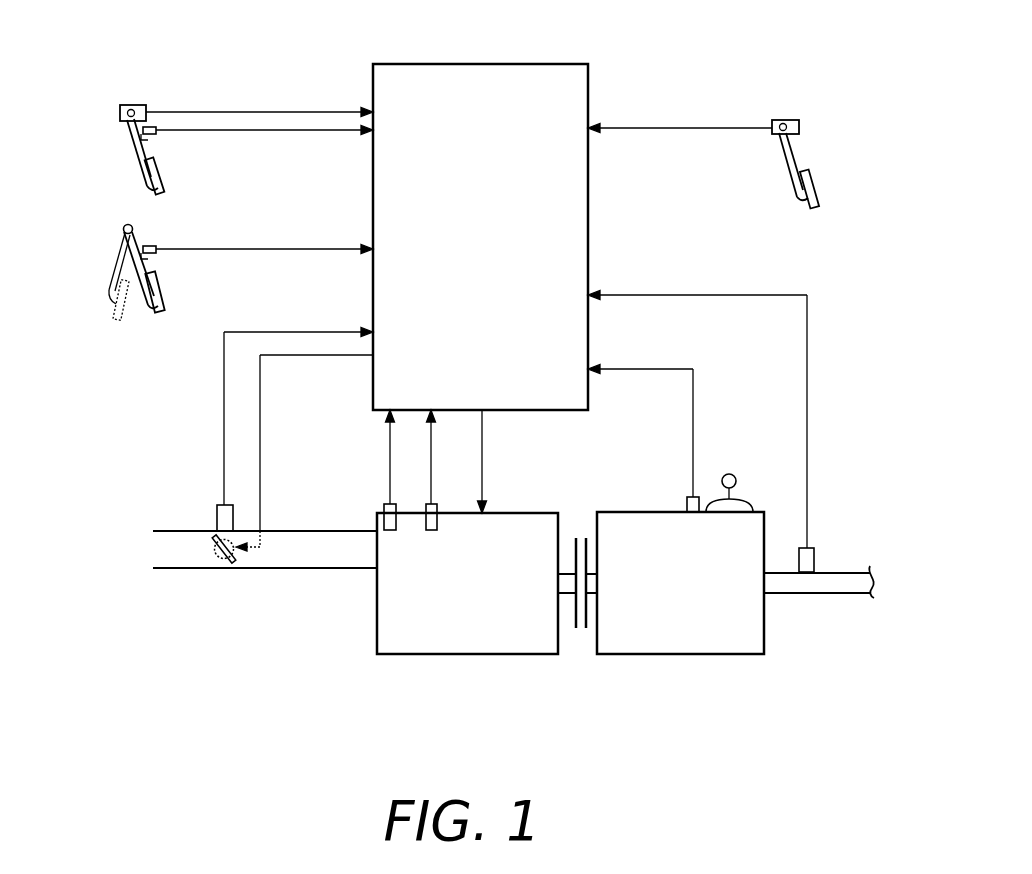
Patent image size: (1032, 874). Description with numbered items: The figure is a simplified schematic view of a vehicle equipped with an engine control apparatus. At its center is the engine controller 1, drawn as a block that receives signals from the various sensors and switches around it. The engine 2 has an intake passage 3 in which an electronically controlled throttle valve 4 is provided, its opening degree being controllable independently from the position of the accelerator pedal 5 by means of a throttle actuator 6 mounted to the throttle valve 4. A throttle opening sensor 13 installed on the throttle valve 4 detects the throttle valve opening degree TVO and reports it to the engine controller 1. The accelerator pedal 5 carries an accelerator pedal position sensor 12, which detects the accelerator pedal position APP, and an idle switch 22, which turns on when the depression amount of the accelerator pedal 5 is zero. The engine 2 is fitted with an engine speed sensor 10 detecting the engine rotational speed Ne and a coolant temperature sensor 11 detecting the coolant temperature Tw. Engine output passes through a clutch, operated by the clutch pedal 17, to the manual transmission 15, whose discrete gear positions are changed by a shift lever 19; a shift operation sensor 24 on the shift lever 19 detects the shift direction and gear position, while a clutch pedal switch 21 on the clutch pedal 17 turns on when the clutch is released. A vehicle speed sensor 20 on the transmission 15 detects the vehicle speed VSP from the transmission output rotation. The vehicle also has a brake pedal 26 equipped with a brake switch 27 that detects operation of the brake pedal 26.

The engine controller 1 is at (558, 70).
The engine 2 is at (530, 513).
The intake passage 3 is at (285, 568).
The throttle valve 4 is at (225, 567).
The accelerator pedal 5 is at (140, 146).
The throttle actuator 6 is at (213, 556).
The engine speed sensor 10 is at (384, 508).
The coolant temperature sensor 11 is at (426, 510).
The accelerator pedal position sensor 12 is at (140, 106).
The throttle opening sensor 13 is at (217, 508).
The transmission 15 is at (762, 528).
The clutch pedal 17 is at (148, 308).
The shift lever 19 is at (736, 476).
The vehicle speed sensor 20 is at (815, 554).
The clutch pedal switch 21 is at (137, 255).
The idle switch 22 is at (140, 139).
The shift operation sensor 24 is at (686, 500).
The brake pedal 26 is at (785, 156).
The brake switch 27 is at (798, 118).